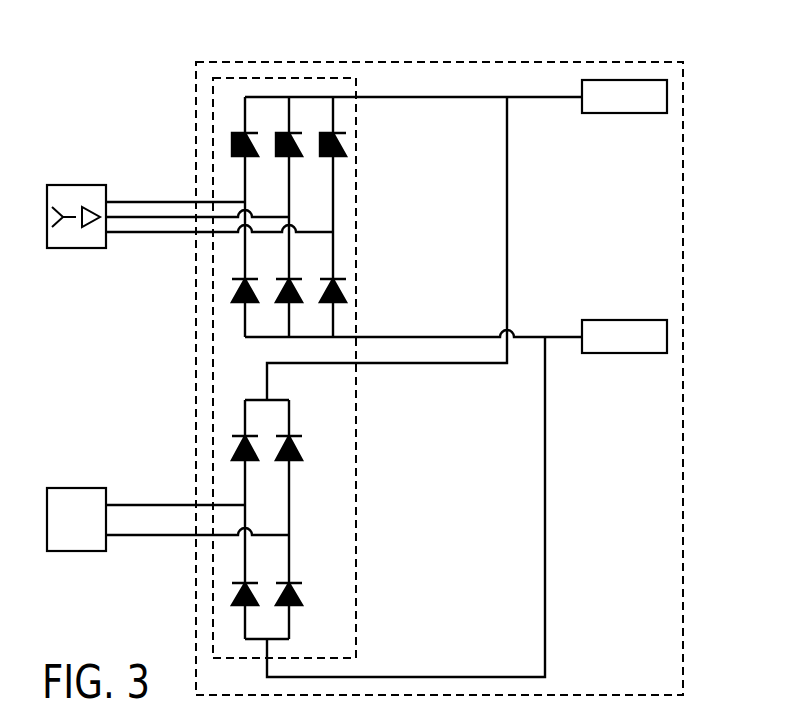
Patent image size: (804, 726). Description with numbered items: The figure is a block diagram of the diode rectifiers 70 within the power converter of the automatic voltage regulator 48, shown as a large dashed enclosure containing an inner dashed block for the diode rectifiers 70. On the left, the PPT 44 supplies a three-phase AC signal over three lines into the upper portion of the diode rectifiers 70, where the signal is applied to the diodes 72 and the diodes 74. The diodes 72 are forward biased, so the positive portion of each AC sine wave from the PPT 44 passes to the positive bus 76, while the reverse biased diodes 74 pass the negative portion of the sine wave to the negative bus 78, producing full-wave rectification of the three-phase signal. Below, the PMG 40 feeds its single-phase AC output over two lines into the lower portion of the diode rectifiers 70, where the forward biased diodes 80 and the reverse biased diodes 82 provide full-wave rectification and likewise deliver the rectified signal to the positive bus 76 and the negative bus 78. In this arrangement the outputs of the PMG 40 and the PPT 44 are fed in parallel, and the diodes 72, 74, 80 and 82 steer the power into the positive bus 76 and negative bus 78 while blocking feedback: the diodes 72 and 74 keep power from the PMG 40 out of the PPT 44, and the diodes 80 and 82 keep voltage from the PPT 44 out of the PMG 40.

The PMG 40 is at (74, 488).
The PPT 44 is at (74, 185).
The automatic voltage regulator (AVR) 48 is at (196, 382).
The diode rectifiers 70 is at (287, 78).
The diodes 72 is at (250, 156).
The diodes 74 is at (250, 302).
The positive bus 76 is at (625, 80).
The negative bus 78 is at (625, 320).
The forward biased diodes 80 is at (250, 460).
The reverse biased diodes 82 is at (250, 605).